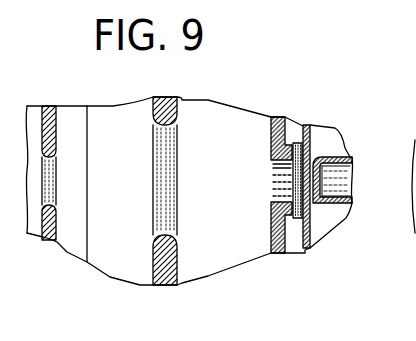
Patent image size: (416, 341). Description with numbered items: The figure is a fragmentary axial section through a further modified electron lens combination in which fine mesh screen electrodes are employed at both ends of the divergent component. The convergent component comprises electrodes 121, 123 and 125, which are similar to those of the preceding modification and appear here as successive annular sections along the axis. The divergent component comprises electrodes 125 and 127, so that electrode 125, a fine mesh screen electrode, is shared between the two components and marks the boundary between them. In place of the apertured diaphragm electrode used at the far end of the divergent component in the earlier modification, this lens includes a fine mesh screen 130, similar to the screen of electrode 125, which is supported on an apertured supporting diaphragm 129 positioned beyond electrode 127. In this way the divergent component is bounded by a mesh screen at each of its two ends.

The electrode 121 is at (59, 134).
The electrode 123 is at (182, 116).
The electrode 125 is at (288, 183).
The electrode 127 is at (315, 145).
The apertured supporting diaphragm 129 is at (351, 168).
The fine mesh screen 130 is at (340, 177).